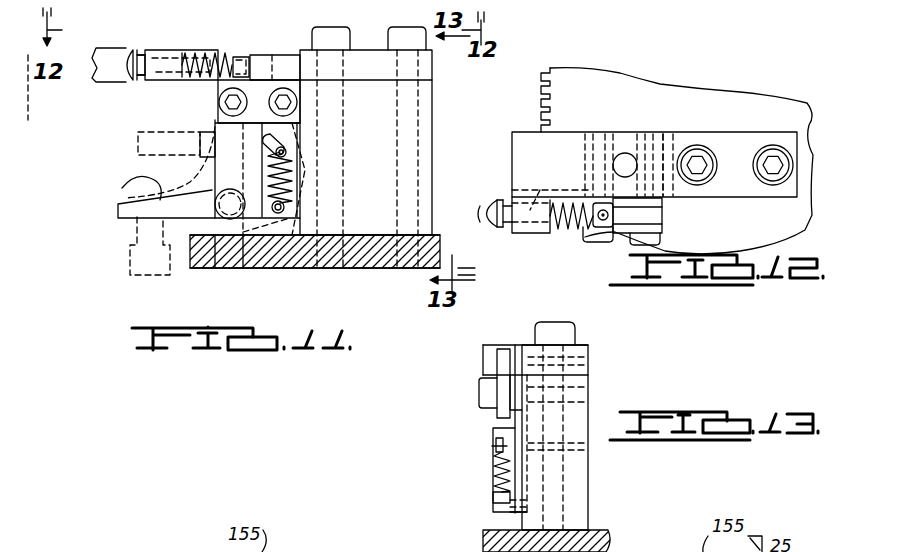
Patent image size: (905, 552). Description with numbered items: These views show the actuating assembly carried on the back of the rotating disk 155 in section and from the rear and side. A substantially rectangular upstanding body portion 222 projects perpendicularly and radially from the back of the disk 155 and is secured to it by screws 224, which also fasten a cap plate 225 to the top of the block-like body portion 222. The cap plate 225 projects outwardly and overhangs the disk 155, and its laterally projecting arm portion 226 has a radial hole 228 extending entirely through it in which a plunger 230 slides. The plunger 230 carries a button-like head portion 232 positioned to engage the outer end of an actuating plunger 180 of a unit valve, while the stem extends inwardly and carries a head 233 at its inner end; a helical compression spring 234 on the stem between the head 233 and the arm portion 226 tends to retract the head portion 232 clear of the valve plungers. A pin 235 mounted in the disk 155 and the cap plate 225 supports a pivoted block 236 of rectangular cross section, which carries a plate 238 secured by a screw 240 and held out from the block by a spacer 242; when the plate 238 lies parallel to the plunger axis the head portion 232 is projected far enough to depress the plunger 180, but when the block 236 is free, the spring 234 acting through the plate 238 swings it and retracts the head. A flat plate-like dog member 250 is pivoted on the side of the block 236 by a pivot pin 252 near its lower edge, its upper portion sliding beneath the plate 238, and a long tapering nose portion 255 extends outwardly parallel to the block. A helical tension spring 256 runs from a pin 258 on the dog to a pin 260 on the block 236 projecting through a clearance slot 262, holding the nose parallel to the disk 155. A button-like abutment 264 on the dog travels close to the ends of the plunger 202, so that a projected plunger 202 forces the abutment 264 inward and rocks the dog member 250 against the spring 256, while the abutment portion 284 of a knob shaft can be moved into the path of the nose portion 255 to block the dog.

In FIG. 11, the disk 155 is at (373, 268).
In FIG. 13, the disk 155 is at (594, 535).
In FIG. 11, the actuating plunger 180 is at (103, 75).
In FIG. 11, the plunger 202 is at (138, 150).
In FIG. 11, the body portion 222 is at (428, 122).
In FIG. 13, the body portion 222 is at (577, 416).
In FIG. 11, the screws 224 is at (396, 28).
In FIG. 12, the screws 224 is at (773, 185).
In FIG. 13, the screws 224 is at (555, 333).
In FIG. 11, the cap plate 225 is at (432, 70).
In FIG. 12, the cap plate 225 is at (750, 137).
In FIG. 13, the cap plate 225 is at (585, 350).
In FIG. 11, the arm portion 226 is at (158, 78).
In FIG. 12, the arm portion 226 is at (535, 236).
In FIG. 13, the arm portion 226 is at (483, 358).
In FIG. 12, the radial hole 228 is at (510, 238).
In FIG. 11, the plunger 230 is at (142, 50).
In FIG. 12, the plunger 230 is at (496, 228).
In FIG. 11, the head portion 232 is at (129, 48).
In FIG. 12, the head portion 232 is at (492, 204).
In FIG. 11, the head 233 is at (235, 57).
In FIG. 12, the head 233 is at (581, 216).
In FIG. 11, the helical compression spring 234 is at (193, 80).
In FIG. 11, the pin 235 is at (255, 268).
In FIG. 12, the pin 235 is at (625, 153).
In FIG. 11, the pivoted block 236 is at (232, 240).
In FIG. 12, the pivoted block 236 is at (662, 140).
In FIG. 11, the plate 238 is at (278, 55).
In FIG. 12, the plate 238 is at (662, 222).
In FIG. 13, the plate 238 is at (505, 349).
In FIG. 12, the screw 240 is at (662, 237).
In FIG. 13, the screw 240 is at (479, 393).
In FIG. 12, the spacer 242 is at (662, 203).
In FIG. 13, the spacer 242 is at (516, 385).
In FIG. 11, the dog member 250 is at (212, 169).
In FIG. 12, the dog member 250 is at (541, 189).
In FIG. 13, the dog member 250 is at (510, 512).
In FIG. 11, the pivot pin 252 is at (215, 204).
In FIG. 11, the nose portion 255 is at (150, 176).
In FIG. 12, the nose portion 255 is at (498, 198).
In FIG. 11, the helical tension spring 256 is at (287, 175).
In FIG. 13, the helical tension spring 256 is at (493, 470).
In FIG. 11, the pin 258 is at (286, 207).
In FIG. 13, the pin 258 is at (493, 495).
In FIG. 11, the pin 260 is at (284, 152).
In FIG. 13, the pin 260 is at (496, 446).
In FIG. 11, the clearance slot 262 is at (274, 143).
In FIG. 11, the abutment 264 is at (210, 135).
In FIG. 13, the abutment 264 is at (493, 430).
In FIG. 11, the abutment portion 284 is at (135, 235).
In FIG. 12, the abutment portion 284 is at (482, 216).